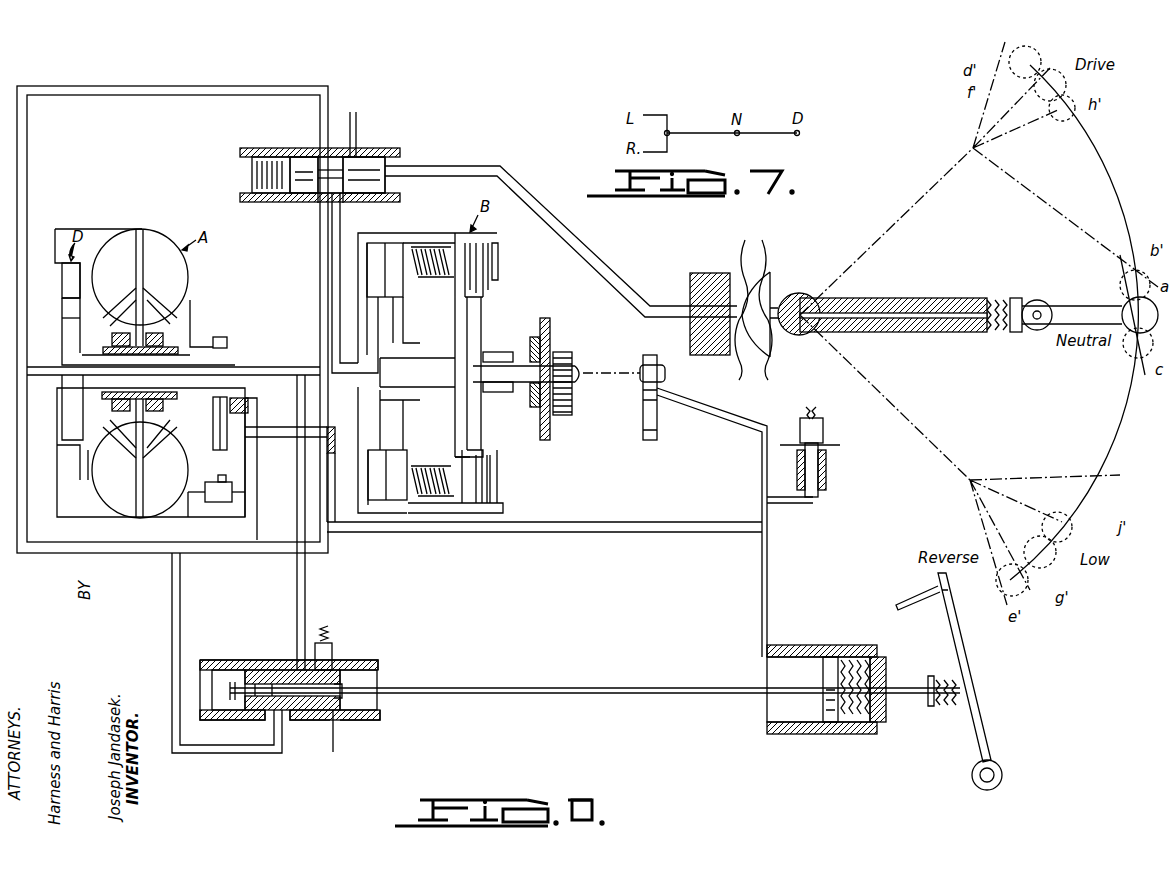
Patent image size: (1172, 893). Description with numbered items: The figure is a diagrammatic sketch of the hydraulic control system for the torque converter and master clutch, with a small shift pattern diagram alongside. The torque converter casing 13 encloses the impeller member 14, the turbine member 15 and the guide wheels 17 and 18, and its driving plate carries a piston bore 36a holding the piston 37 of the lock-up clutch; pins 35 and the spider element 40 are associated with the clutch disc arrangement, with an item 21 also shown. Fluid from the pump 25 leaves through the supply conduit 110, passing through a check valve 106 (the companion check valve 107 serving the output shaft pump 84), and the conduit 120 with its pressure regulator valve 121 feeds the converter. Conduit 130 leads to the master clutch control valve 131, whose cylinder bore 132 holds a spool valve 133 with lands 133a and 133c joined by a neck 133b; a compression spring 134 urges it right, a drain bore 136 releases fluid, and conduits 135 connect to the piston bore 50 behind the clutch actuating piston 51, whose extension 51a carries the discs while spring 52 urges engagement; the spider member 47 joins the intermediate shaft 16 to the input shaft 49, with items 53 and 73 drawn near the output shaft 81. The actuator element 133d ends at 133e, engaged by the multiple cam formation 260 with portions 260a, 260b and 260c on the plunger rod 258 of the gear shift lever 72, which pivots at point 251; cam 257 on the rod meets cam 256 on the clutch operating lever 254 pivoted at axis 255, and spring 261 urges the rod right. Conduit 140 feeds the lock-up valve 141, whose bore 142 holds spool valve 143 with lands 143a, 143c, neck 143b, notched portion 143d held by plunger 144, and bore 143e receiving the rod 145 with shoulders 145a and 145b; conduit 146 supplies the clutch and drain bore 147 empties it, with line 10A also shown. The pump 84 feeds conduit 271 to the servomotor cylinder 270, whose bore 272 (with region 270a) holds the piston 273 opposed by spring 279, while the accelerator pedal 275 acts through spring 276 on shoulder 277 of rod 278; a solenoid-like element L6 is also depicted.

The conduit 130 is at (148, 89).
The torque converter casing 13 is at (112, 228).
The piston bore 36a is at (50, 250).
The impeller member 14 is at (140, 277).
The turbine or runner member 15 is at (123, 287).
The primary guide wheel 17 is at (141, 302).
The secondary guide wheel 18 is at (133, 337).
The block 21 is at (170, 333).
The pins 35 is at (80, 318).
The piston 37 is at (73, 474).
The pump 25 is at (214, 430).
The check valve 106 is at (248, 403).
The pressure fluid supply conduit 110 is at (257, 450).
The pressure regulator valve 121 is at (218, 504).
The conduit 120 is at (186, 504).
The spool-type valve 133 is at (390, 168).
The control valve 131 is at (256, 158).
The valve land 133a is at (302, 160).
The valve land 133c is at (372, 162).
The reduced neck portion 133b is at (341, 155).
The drain bore 136 is at (358, 128).
The compression spring 134 is at (252, 171).
The cylinder bore 132 is at (312, 188).
The valve actuator element 133d is at (500, 167).
The conduits 135 is at (330, 259).
The spider element 40 is at (434, 318).
The clutch actuating piston 51 is at (394, 244).
The compression spring 52 is at (432, 245).
The spider member 47 is at (485, 310).
The intermediate shaft 16 is at (479, 372).
The input shaft 49 is at (518, 366).
The gear 53 is at (564, 352).
The gear 73 is at (572, 398).
The output shaft 81 is at (646, 368).
The output shaft driven pump 84 is at (636, 416).
The piston bore 50 is at (381, 505).
The extension 51a is at (462, 510).
The check valve 107 is at (336, 420).
The pipe 10A is at (577, 533).
The conduit 146 is at (236, 361).
The conduit 140 is at (172, 598).
The lock-up clutch control valve 141 is at (215, 667).
The spool-type valve 143 is at (250, 710).
The valve land 143a is at (254, 670).
The reduced neck portion 143b is at (272, 670).
The valve land 143c is at (300, 696).
The notched portion 143d is at (350, 670).
The bore 143e is at (294, 700).
The spring pressed plunger element 144 is at (332, 650).
The shoulder-like formation 145a is at (368, 674).
The shoulder-like formation 145b is at (228, 705).
The cylinder bore 142 is at (334, 696).
The valve actuating rod 145 is at (547, 688).
The drain bore 147 is at (344, 740).
The conduit 271 is at (760, 562).
The solenoid L6 is at (823, 425).
The servomotor cylinder 270 is at (790, 646).
The piston valve 273 is at (832, 660).
The compression spring 279 is at (856, 725).
The bore 272 is at (769, 721).
The cylinder bore 270a is at (764, 688).
The compressible resilient spring means 276 is at (940, 676).
The rod 278 is at (926, 688).
The shoulder 277 is at (930, 704).
The accelerator pedal 275 is at (960, 638).
The cam portion 260a is at (739, 298).
The cam portion 260b is at (760, 280).
The multiple cam formation 260 is at (786, 296).
The cam portion 260c is at (756, 348).
The rod end 133e is at (748, 377).
The pivot point 251 is at (819, 324).
The plunger rod 258 is at (848, 312).
The gear shift lever 72 is at (920, 310).
The cam formation 257 is at (1004, 308).
The cam formation 256 is at (1018, 298).
The compression spring 261 is at (999, 332).
The axis of rotation 255 is at (1037, 300).
The clutch operating lever 254 is at (1014, 114).